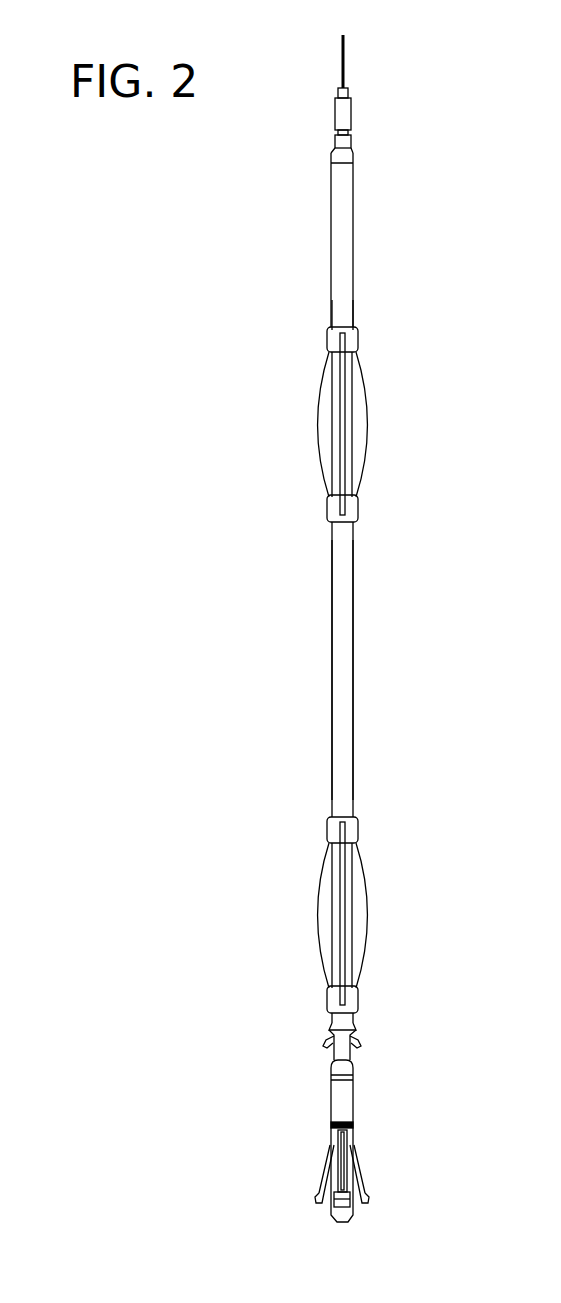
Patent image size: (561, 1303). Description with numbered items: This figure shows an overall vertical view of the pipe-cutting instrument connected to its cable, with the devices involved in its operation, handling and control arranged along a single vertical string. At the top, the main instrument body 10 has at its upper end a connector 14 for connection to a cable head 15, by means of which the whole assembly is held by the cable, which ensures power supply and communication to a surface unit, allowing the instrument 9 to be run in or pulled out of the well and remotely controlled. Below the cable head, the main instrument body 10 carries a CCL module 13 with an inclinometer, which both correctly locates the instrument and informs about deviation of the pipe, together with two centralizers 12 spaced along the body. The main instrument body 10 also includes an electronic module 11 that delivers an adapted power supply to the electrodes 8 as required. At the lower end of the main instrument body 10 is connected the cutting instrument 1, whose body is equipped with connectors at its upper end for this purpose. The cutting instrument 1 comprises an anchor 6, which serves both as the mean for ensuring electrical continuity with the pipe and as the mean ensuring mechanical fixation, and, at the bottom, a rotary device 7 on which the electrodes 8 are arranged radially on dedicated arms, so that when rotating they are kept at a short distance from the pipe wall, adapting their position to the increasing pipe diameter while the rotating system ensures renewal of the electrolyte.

The instrument 1 is at (327, 1110).
The anchor 6 is at (358, 1043).
The rotary device 7 is at (355, 1127).
The electrode 8 is at (369, 1198).
The instrument 9 is at (247, 516).
The main instrument body 10 is at (327, 652).
The electronic module 11 is at (347, 660).
The centralizer 12 is at (366, 418).
The CCL module 13 is at (345, 252).
The connector 14 is at (346, 120).
The cable head 15 is at (345, 53).